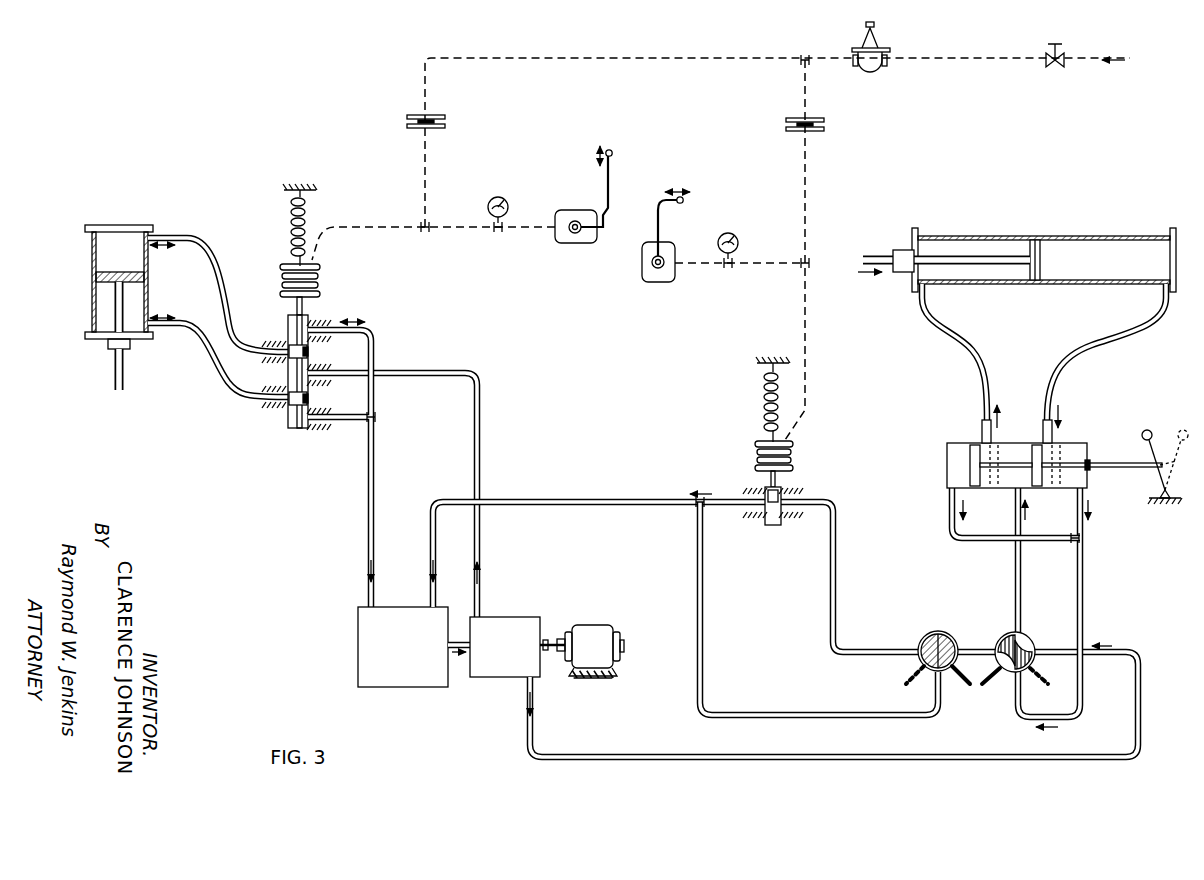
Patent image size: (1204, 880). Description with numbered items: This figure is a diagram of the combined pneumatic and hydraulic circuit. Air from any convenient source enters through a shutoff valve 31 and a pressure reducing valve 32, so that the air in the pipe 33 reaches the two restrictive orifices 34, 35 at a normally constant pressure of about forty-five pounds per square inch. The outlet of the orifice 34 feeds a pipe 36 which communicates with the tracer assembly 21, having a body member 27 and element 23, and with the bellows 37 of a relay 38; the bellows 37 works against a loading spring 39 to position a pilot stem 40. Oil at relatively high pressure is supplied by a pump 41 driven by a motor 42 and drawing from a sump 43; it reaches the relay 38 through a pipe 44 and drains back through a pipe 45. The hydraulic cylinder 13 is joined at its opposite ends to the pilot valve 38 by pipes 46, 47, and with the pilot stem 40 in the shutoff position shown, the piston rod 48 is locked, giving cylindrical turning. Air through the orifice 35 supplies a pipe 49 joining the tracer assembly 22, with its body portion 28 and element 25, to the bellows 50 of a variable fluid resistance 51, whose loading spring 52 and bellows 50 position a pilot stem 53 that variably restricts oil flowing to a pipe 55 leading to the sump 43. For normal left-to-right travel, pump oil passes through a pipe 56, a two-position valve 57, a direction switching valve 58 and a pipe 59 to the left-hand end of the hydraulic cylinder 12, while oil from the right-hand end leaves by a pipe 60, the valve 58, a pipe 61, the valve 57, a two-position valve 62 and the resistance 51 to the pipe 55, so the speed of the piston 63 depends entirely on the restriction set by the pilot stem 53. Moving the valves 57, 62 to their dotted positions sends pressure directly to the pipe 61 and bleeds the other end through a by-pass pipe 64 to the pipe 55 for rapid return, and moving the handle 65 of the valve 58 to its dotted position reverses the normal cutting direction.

The hydraulic cylinder 12 is at (1017, 249).
The hydraulic cylinder 13 is at (90, 246).
The tracer assembly 21 is at (596, 207).
The tracer assembly 22 is at (651, 249).
The element of pilot assembly 23 is at (612, 160).
The element of tracer assembly 25 is at (682, 205).
The body member 27 is at (578, 210).
The body portion 28 is at (642, 272).
The shutoff valve 31 is at (1058, 68).
The pressure reducing valve 32 is at (878, 70).
The pipe 33 is at (620, 60).
The restrictive orifice 34 is at (408, 118).
The restrictive orifice 35 is at (825, 123).
The pipe 36 is at (390, 230).
The bellows 37 is at (320, 285).
The relay 38 is at (307, 307).
The loading spring 39 is at (290, 238).
The pilot stem 40 is at (305, 305).
The pump 41 is at (478, 680).
The motor 42 is at (598, 625).
The sump 43 is at (400, 687).
The pipe 44 is at (480, 450).
The pipe 45 is at (373, 452).
The pipe 46 is at (215, 370).
The pipe 47 is at (190, 236).
The piston rod 48 is at (114, 374).
The pipe 49 is at (802, 290).
The bellows 50 is at (755, 453).
The variable fluid resistance 51 is at (772, 441).
The loading spring 52 is at (765, 404).
The pilot stem 53 is at (777, 481).
The pipe 55 is at (570, 501).
The pipe 56 is at (808, 757).
The two-position valve 57 is at (1010, 632).
The direction switching valve 58 is at (1088, 433).
The pipe 59 is at (948, 347).
The pipe 60 is at (1127, 347).
The pipe 61 is at (1082, 588).
The two-position valve 62 is at (935, 631).
The piston 63 is at (1040, 270).
The pipe 64 is at (766, 713).
The handle 65 is at (1150, 432).